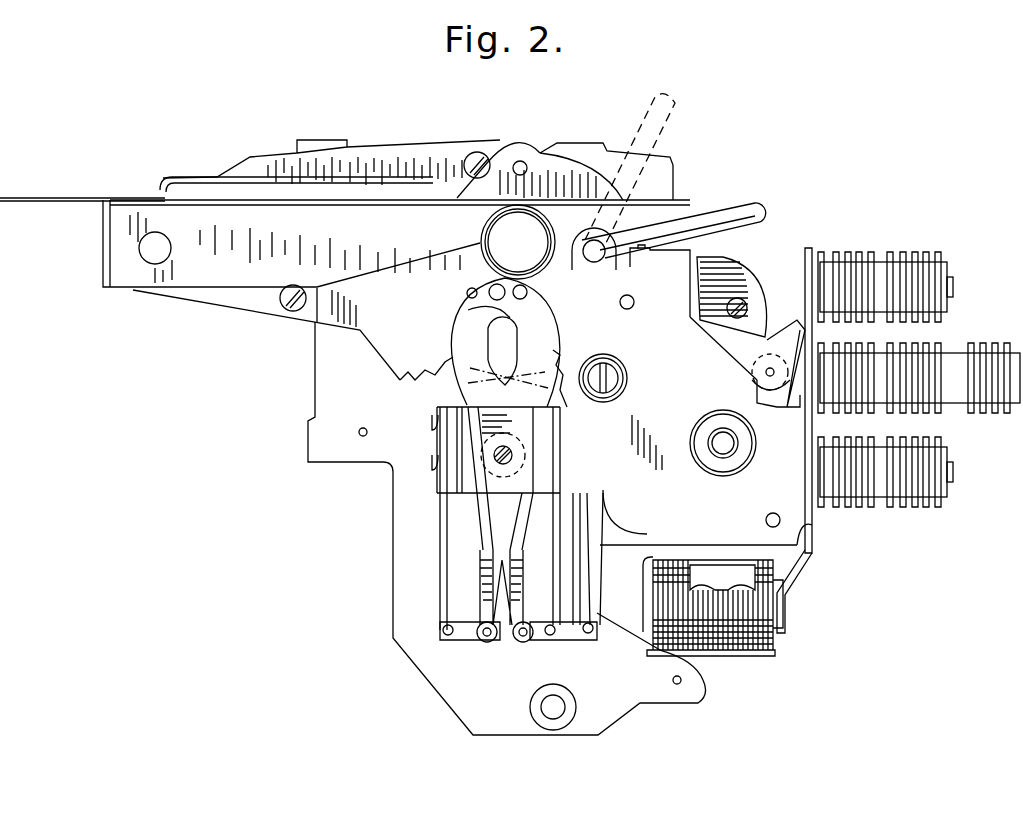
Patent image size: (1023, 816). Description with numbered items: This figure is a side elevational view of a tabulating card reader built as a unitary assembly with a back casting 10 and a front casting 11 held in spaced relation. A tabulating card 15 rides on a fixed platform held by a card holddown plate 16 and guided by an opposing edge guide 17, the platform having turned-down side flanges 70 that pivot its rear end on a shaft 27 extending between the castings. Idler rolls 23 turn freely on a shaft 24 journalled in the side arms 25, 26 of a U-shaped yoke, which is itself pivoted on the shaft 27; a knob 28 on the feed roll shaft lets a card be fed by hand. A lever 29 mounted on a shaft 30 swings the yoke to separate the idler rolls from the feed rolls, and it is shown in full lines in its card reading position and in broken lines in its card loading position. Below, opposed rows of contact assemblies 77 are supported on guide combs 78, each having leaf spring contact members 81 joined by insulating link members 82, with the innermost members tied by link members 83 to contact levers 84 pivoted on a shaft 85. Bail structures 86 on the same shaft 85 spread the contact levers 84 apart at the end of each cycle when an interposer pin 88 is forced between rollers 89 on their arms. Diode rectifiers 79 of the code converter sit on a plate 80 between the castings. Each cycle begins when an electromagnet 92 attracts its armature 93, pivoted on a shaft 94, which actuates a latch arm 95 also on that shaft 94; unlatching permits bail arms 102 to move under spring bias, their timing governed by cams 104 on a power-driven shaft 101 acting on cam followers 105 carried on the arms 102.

The back casting 10 is at (320, 450).
The front casting 11 is at (803, 537).
The tabulating card 15 is at (12, 205).
The card holddown plate 16 is at (186, 176).
The edge guide 17 is at (233, 196).
The idler rolls 23 is at (520, 140).
The shaft 24 is at (528, 173).
The side arm 25 is at (548, 150).
The side arm 26 is at (392, 150).
The shaft 27 is at (153, 258).
The knob 28 is at (490, 228).
The lever 29 is at (740, 205).
The shaft 30 is at (585, 265).
The side flanges 70 is at (232, 270).
The contact assemblies 77 is at (585, 630).
The guide combs 78 is at (480, 507).
The diode rectifiers 79 is at (924, 252).
The plate 80 is at (807, 248).
The leaf spring contact members 81 is at (440, 532).
The link members 82 is at (570, 640).
The link members 83 is at (450, 640).
The contact levers 84 is at (490, 642).
The shaft 85 is at (515, 455).
The bail structures 86 is at (462, 340).
The interposer pin 88 is at (466, 295).
The rollers 89 is at (485, 290).
The electromagnet 92 is at (752, 640).
The armature 93 is at (790, 587).
The shaft 94 is at (766, 520).
The latch arm 95 is at (797, 383).
The shaft 101 is at (725, 450).
The bail arms 102 is at (470, 318).
The cams 104 is at (770, 405).
The cam followers 105 is at (748, 377).